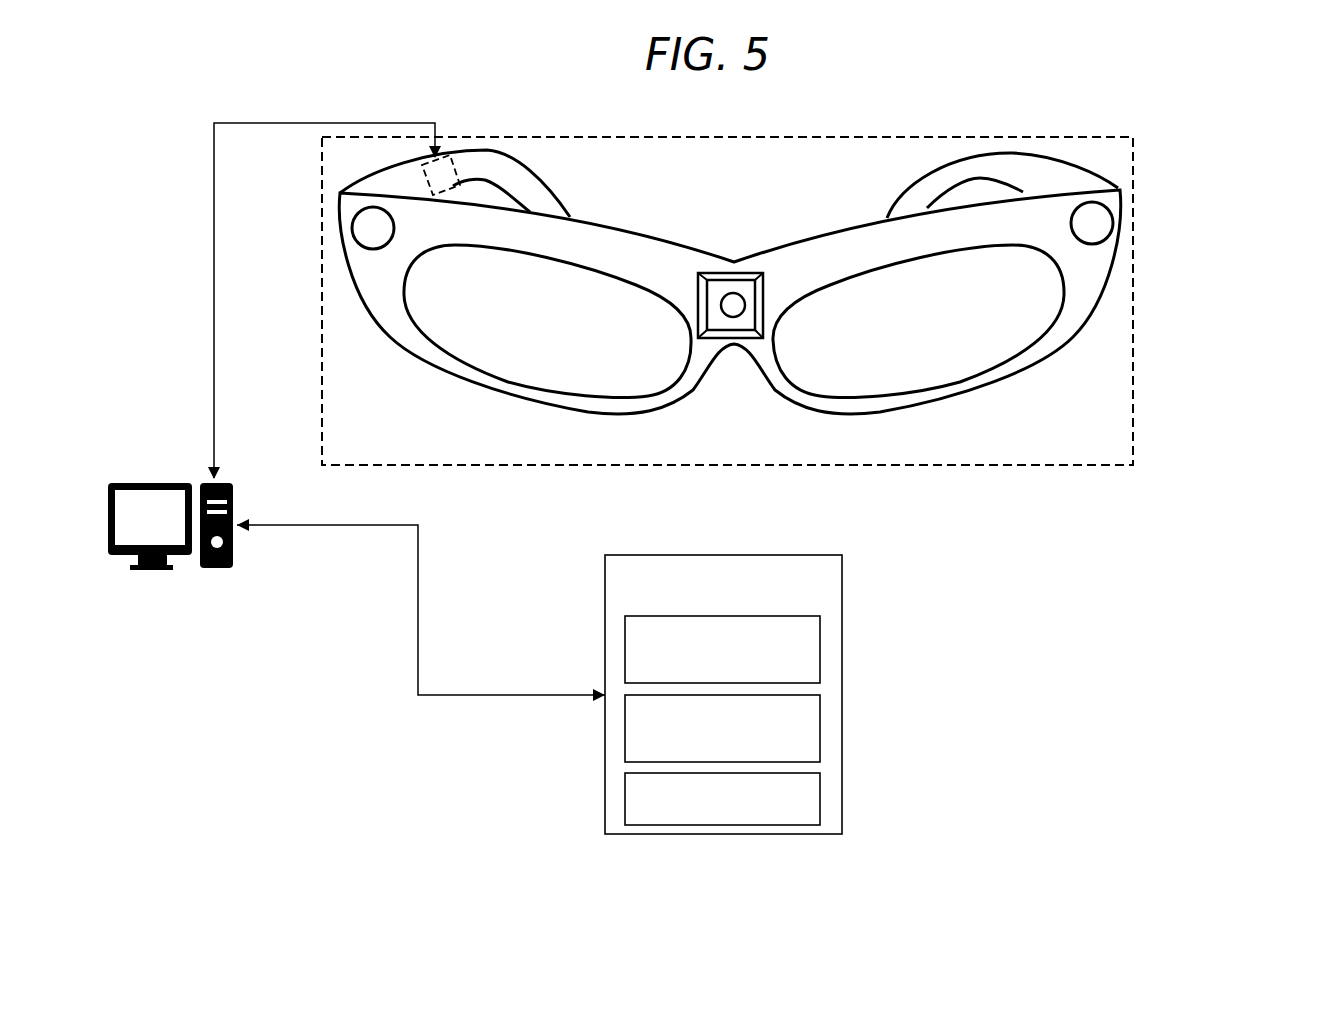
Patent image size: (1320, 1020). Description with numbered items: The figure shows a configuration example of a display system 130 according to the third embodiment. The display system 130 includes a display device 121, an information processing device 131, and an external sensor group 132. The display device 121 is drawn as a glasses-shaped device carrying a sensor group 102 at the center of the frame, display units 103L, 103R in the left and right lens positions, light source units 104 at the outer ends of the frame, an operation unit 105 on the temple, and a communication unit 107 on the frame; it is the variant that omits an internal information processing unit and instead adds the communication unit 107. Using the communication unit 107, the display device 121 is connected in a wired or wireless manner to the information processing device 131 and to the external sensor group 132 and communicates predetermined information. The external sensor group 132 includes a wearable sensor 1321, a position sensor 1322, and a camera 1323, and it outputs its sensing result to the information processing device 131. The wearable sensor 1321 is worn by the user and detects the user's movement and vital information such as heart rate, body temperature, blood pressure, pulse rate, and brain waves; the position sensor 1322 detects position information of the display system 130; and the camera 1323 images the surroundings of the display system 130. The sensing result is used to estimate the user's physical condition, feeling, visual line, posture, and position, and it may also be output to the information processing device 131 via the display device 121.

The display system 130 is at (1190, 567).
The display device 121 is at (969, 455).
The operation unit 105 is at (1023, 157).
The communication unit 107 is at (452, 168).
The light source unit 104 is at (365, 229).
The display unit 103R is at (537, 280).
The display unit 103L is at (800, 310).
The sensor group 102 is at (722, 322).
The information processing device 131 is at (210, 568).
The external sensor group 132 is at (637, 567).
The wearable sensor 1321 is at (815, 653).
The position sensor 1322 is at (820, 725).
The camera 1323 is at (820, 800).